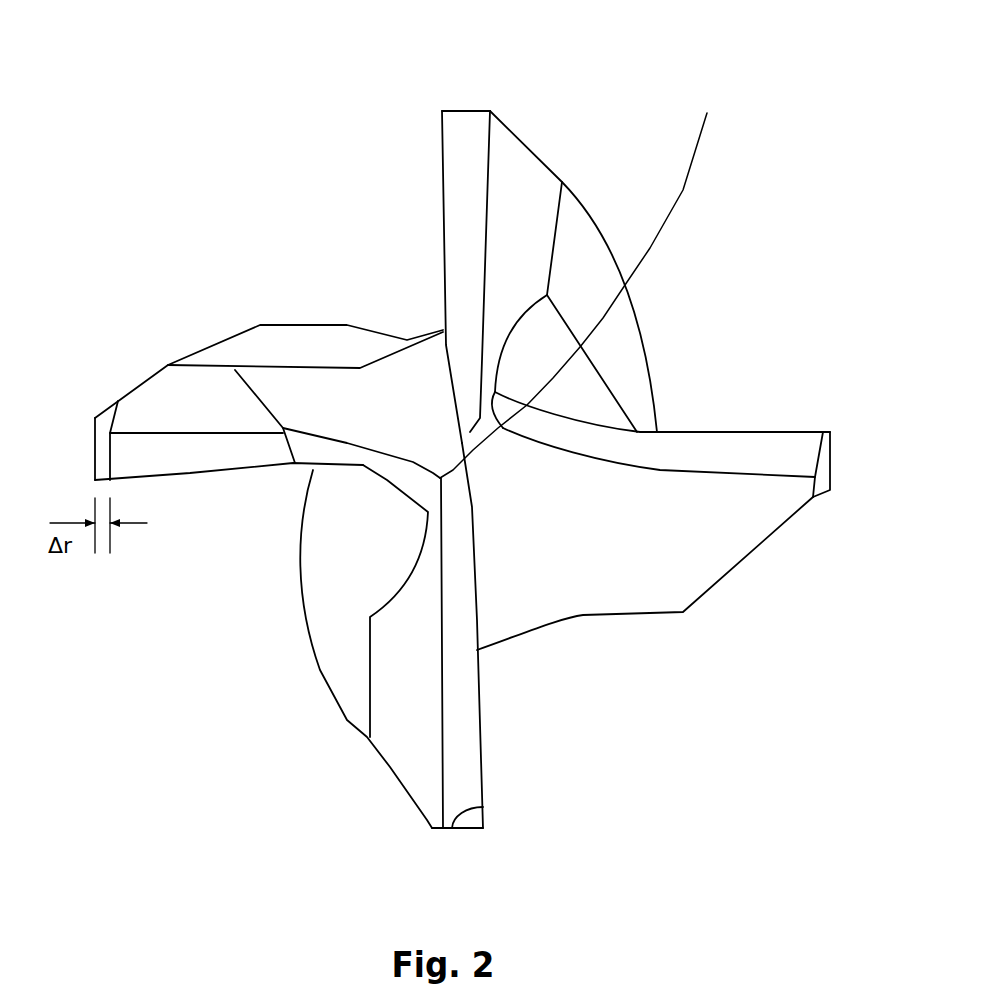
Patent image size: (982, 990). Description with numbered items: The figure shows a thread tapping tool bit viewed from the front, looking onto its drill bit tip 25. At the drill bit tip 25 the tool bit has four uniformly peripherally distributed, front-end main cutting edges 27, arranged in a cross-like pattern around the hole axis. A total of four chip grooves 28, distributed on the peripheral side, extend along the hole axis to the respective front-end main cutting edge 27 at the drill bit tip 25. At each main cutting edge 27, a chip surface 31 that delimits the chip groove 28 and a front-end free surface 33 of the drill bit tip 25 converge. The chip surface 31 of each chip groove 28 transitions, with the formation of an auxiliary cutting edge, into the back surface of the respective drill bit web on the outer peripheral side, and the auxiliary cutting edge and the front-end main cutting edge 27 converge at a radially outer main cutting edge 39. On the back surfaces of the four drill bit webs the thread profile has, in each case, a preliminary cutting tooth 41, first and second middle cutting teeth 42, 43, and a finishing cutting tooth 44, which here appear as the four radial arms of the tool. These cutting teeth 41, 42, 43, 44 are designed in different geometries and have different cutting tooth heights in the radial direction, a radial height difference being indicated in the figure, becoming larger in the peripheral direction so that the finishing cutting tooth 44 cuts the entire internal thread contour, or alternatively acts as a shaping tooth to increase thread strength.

The drill bit tip 25 is at (583, 282).
The front-end main cutting edge 27 is at (442, 150).
The chip groove 28 is at (312, 253).
The chip surface 31 is at (511, 233).
The front-end free surface 33 is at (484, 123).
The radially outer main cutting edge 39 is at (442, 111).
The preliminary cutting tooth 41 is at (405, 110).
The first middle cutting tooth 42 is at (838, 405).
The second middle cutting tooth 43 is at (494, 848).
The finishing cutting tooth 44 is at (84, 473).